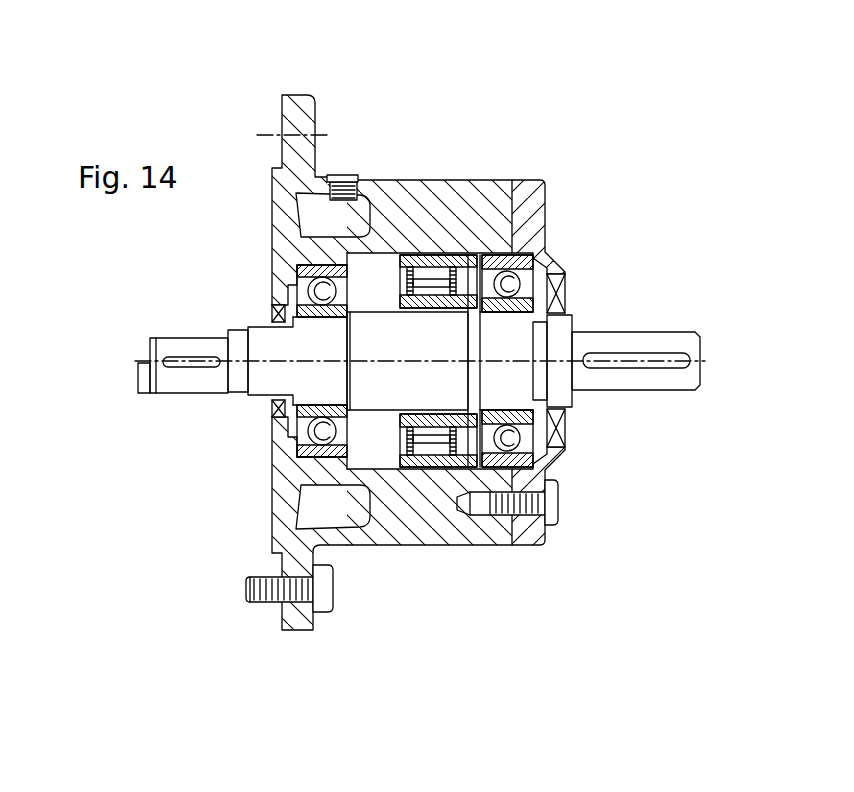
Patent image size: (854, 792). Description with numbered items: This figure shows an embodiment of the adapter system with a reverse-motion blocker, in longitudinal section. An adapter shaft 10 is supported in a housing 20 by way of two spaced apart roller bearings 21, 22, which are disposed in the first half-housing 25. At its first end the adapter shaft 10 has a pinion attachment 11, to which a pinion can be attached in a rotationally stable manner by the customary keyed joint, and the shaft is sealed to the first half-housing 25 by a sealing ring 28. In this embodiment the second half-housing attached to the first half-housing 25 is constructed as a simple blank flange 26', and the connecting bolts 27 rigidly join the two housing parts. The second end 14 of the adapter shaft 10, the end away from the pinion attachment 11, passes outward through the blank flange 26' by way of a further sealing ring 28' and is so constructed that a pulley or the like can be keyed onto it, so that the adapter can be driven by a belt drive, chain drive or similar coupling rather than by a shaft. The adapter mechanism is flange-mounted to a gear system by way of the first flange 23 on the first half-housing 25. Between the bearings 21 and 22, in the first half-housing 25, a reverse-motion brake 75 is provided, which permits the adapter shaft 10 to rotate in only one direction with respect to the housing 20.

The adapter shaft 10 is at (232, 405).
The pinion attachment 11 is at (170, 390).
The second end of the adapter shaft 14 is at (660, 322).
The housing 20 is at (481, 347).
The roller bearing 21 is at (292, 466).
The roller bearing 22 is at (547, 465).
The first flange 23 is at (275, 615).
The first half-housing 25 is at (428, 528).
The blank flange 26' is at (559, 227).
The connecting bolt 27 is at (556, 519).
The sealing ring 28 is at (249, 344).
The sealing ring 28' is at (597, 360).
The reverse-motion brake 75 is at (397, 280).